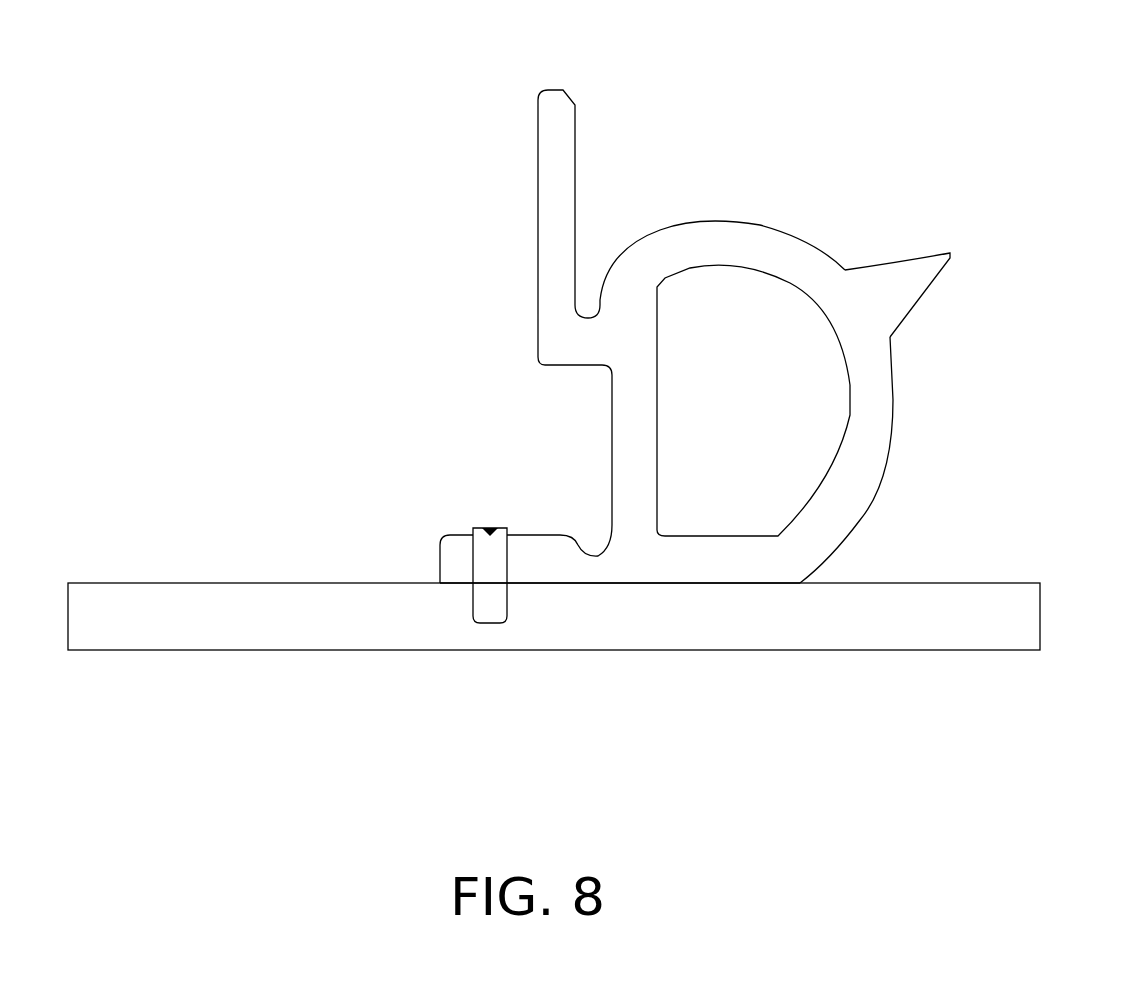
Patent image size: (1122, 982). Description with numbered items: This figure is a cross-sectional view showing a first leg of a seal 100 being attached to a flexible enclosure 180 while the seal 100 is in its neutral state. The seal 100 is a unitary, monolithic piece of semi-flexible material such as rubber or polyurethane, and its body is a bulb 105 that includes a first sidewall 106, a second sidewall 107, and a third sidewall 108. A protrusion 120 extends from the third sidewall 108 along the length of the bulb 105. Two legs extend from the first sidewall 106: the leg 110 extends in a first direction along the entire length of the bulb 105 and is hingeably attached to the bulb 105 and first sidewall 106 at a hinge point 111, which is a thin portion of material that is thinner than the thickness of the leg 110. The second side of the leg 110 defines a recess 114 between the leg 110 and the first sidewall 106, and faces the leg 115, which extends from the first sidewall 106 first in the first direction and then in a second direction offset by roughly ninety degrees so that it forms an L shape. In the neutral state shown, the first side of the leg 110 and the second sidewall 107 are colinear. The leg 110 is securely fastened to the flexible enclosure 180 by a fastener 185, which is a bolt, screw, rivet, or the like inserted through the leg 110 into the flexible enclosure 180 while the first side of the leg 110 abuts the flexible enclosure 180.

The seal 100 is at (868, 62).
The bulb 105 is at (1012, 324).
The first sidewall 106 is at (625, 420).
The second sidewall 107 is at (715, 560).
The third sidewall 108 is at (880, 440).
The leg 110 is at (452, 550).
The hinge point 111 is at (594, 570).
The recess 114 is at (575, 500).
The leg 115 is at (558, 200).
The protrusion 120 is at (925, 268).
The flexible enclosure 180 is at (190, 632).
The fastener 185 is at (490, 600).